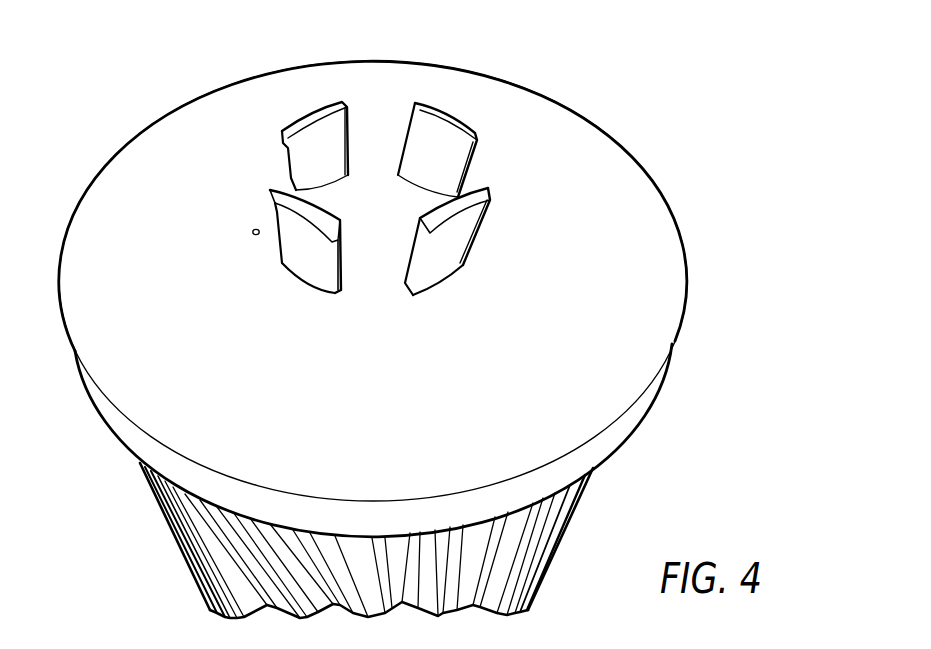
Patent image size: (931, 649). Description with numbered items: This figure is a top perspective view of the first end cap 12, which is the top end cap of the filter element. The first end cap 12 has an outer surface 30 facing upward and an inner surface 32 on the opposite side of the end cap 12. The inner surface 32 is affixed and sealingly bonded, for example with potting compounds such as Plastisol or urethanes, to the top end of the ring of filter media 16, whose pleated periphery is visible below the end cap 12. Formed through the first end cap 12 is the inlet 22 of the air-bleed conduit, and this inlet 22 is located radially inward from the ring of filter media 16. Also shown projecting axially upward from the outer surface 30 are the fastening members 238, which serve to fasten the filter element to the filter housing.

The first end cap 12 is at (556, 58).
The filter media 16 is at (162, 510).
The inlet 22 is at (256, 229).
The outer surface 30 is at (647, 230).
The inner surface 32 is at (112, 435).
The tabs 238 is at (447, 207).